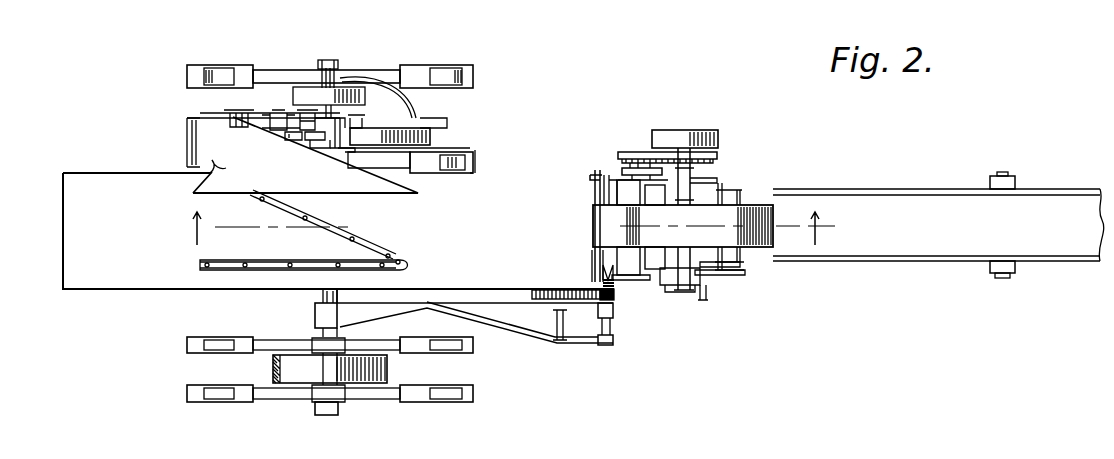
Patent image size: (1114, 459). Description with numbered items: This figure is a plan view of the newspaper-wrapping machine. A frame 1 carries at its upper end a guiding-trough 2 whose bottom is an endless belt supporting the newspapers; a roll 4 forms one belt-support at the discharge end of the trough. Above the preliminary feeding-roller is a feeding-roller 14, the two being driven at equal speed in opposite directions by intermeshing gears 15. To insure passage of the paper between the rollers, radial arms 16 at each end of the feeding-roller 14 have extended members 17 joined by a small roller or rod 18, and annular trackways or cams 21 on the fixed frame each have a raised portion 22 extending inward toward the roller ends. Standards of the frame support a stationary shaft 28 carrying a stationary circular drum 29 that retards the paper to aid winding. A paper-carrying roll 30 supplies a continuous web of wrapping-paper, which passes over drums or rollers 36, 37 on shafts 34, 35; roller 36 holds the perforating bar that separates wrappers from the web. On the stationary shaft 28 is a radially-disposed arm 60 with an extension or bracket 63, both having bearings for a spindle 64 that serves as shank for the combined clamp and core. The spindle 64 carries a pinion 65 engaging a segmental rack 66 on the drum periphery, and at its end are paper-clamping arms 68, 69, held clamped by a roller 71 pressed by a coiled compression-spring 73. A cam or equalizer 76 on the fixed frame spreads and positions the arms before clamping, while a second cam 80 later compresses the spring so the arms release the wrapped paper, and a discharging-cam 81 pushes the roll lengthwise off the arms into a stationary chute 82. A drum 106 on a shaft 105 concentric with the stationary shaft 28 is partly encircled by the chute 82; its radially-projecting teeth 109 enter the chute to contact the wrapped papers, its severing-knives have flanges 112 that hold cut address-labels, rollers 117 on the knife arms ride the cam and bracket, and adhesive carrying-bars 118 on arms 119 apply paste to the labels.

The frame 1 is at (992, 272).
The guiding-trough 2 is at (1050, 189).
The roll 4 is at (504, 228).
The feeding-roller 14 is at (669, 275).
The intermeshing gears 15 is at (716, 143).
The radial arms 16 is at (715, 276).
The extended member 17 is at (720, 268).
The roller or rod 18 is at (740, 255).
The annular trackways or cams 21 is at (720, 180).
The raised portion 22 is at (708, 292).
The stationary shaft 28 is at (322, 296).
The stationary circular drum 29 is at (338, 224).
The paper-carrying roll 30 is at (774, 240).
The shaft 34 is at (628, 168).
The shaft 35 is at (652, 158).
The drum or roller 36 is at (628, 198).
The drum or roller 37 is at (650, 200).
The radially-disposed arm 60 is at (428, 298).
The extension or bracket 63 is at (574, 350).
The spindle 64 is at (612, 328).
The pinion 65 is at (614, 297).
The rack 66 is at (545, 290).
The paper-clamping arm 68 is at (597, 187).
The paper-clamping arm 69 is at (597, 200).
The roller 71 is at (603, 278).
The coiled compression-spring 73 is at (603, 286).
The cam or equalizer 76 is at (598, 178).
The second cam 80 is at (302, 258).
The discharging-cam 81 is at (347, 240).
The stationary chute 82 is at (302, 155).
The shaft 105 is at (333, 118).
The drum 106 is at (370, 148).
The radially-projecting teeth 109 is at (277, 125).
The flange 112 is at (335, 140).
The rollers 117 is at (260, 127).
The adhesive carrying-bars 118 is at (287, 140).
The arms 119 is at (307, 140).